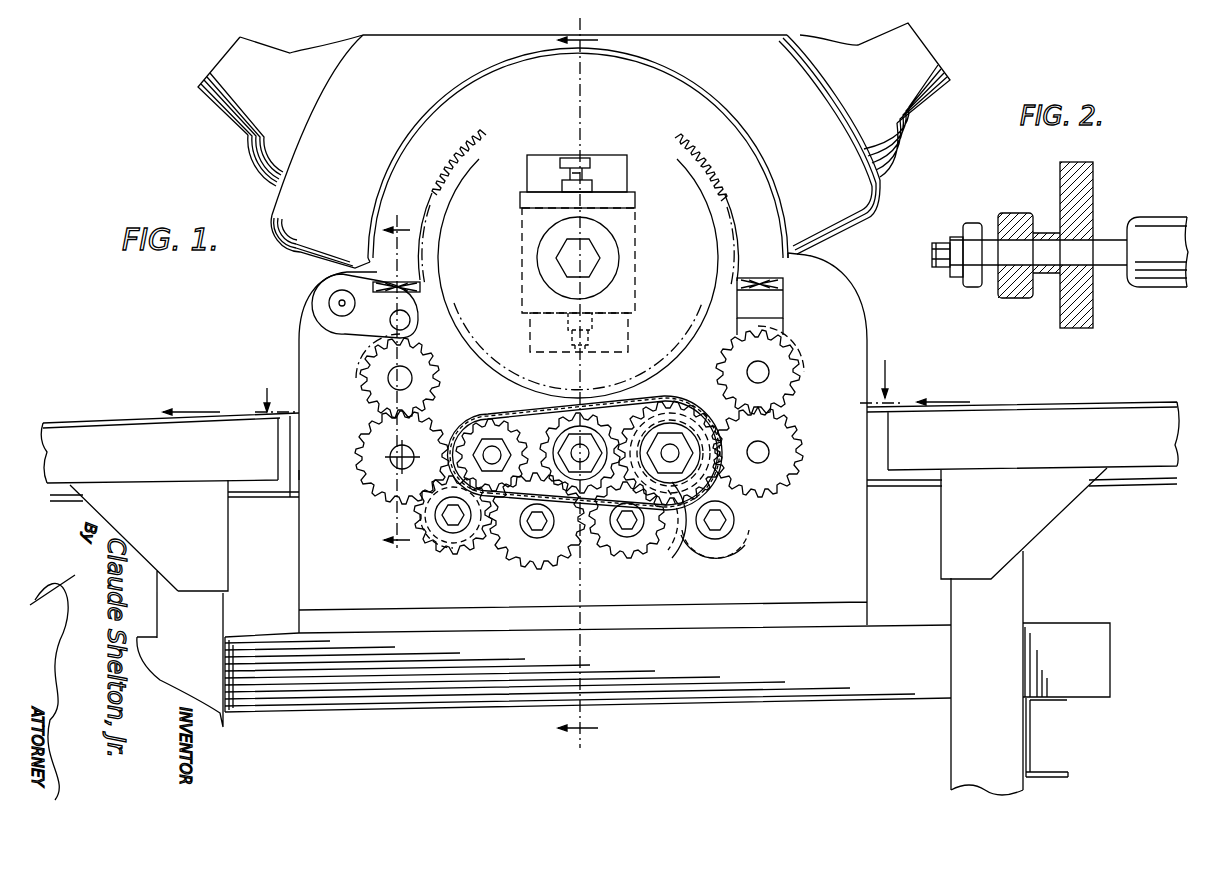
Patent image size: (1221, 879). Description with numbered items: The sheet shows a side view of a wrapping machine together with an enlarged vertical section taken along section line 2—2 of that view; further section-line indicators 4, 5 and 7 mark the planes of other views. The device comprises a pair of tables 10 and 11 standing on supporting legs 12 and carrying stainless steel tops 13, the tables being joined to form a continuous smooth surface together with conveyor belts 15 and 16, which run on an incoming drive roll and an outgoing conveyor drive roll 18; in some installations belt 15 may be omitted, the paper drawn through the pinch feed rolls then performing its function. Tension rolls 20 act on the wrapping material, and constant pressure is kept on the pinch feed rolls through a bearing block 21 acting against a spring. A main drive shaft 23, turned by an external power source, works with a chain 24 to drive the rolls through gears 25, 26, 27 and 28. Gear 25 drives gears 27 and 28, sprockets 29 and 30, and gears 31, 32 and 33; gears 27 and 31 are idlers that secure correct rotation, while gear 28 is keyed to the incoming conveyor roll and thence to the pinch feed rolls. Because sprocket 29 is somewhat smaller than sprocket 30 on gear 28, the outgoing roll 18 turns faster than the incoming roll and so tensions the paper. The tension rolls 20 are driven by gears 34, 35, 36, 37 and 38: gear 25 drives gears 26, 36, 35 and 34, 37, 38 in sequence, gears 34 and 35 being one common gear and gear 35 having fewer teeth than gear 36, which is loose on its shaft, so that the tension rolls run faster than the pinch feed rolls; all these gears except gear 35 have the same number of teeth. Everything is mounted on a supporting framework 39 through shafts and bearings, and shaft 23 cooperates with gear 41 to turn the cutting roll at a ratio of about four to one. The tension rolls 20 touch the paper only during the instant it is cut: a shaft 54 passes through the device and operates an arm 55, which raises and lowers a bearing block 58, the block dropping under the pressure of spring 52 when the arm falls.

In FIG. 1, the section line 2— 2 is at (490, 437).
In FIG. 1, the section line 4- 4 is at (580, 384).
In FIG. 1, the section line 5- 5 is at (566, 377).
In FIG. 1, the section line 7- 7 is at (397, 384).
In FIG. 1, the table 10 is at (1082, 455).
In FIG. 1, the table 11 is at (80, 442).
In FIG. 1, the supporting legs 12 is at (218, 726).
In FIG. 1, the stainless steel tops 13 is at (133, 418).
In FIG. 1, the conveyor belt 15 is at (1053, 394).
In FIG. 1, the conveyor belt 16 is at (268, 498).
In FIG. 2, the outgoing conveyor drive roll 18 is at (1147, 223).
In FIG. 1, the tension rolls 20 is at (778, 318).
In FIG. 1, the bearing block 21 is at (780, 285).
In FIG. 1, the main drive shaft 23 is at (612, 427).
In FIG. 1, the chain 24 is at (686, 540).
In FIG. 1, the gear 25 is at (582, 447).
In FIG. 1, the gear 26 is at (541, 548).
In FIG. 1, the gear 27 is at (625, 548).
In FIG. 1, the gear 28 is at (678, 403).
In FIG. 1, the sprocket 29 is at (493, 448).
In FIG. 2, the sprocket 29 is at (968, 230).
In FIG. 1, the sprocket 30 is at (656, 398).
In FIG. 1, the gear 31 is at (742, 525).
In FIG. 1, the gear 32 is at (790, 456).
In FIG. 1, the gear 33 is at (774, 373).
In FIG. 1, the gear 34 is at (458, 548).
In FIG. 1, the gear 35 is at (432, 545).
In FIG. 1, the gear 36 is at (467, 423).
In FIG. 2, the gear 36 is at (1007, 218).
In FIG. 1, the gear 37 is at (372, 455).
In FIG. 1, the gear 38 is at (372, 377).
In FIG. 1, the supporting framework 39 is at (300, 342).
In FIG. 2, the supporting framework 39 is at (1093, 177).
In FIG. 1, the gear 41 is at (694, 152).
In FIG. 1, the spring 52 is at (420, 287).
In FIG. 1, the shaft 54 is at (329, 303).
In FIG. 1, the arm 55 is at (356, 287).
In FIG. 1, the bearing block 58 is at (425, 331).